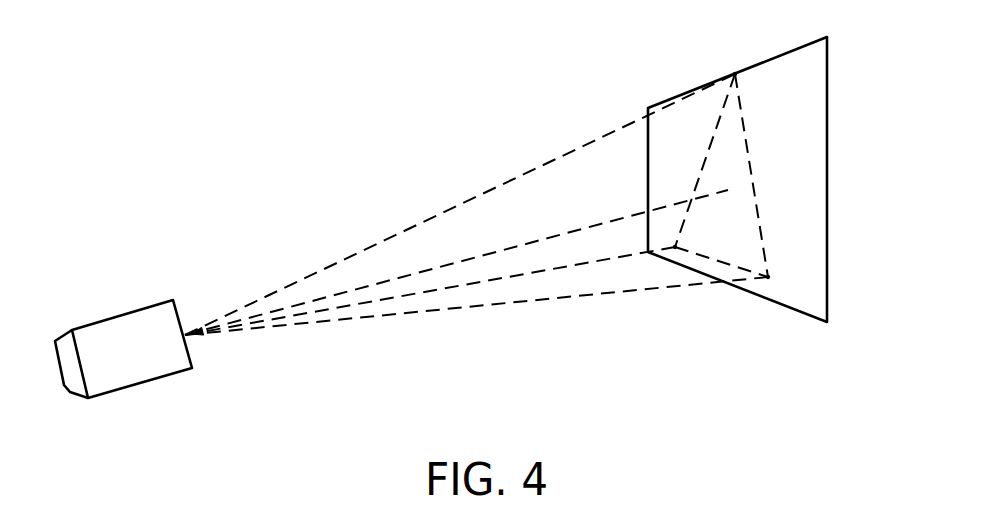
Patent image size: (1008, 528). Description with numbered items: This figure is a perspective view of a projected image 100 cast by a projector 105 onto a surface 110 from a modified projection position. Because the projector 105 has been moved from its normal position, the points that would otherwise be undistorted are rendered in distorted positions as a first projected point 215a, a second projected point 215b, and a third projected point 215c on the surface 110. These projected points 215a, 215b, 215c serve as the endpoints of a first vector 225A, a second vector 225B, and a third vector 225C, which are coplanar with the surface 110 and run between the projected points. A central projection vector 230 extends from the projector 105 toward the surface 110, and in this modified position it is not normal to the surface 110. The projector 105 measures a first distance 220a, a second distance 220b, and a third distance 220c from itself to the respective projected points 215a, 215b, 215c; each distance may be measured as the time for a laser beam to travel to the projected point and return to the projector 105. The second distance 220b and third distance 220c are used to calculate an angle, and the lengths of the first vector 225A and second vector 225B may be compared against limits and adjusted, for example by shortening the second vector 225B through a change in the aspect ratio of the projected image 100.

The projected image 100 is at (476, 224).
The projector 105 is at (154, 374).
The surface 110 is at (828, 262).
The first projected point 215a is at (674, 240).
The second projected point 215b is at (731, 70).
The third projected point 215c is at (768, 285).
The first distance 220a is at (511, 273).
The second distance 220b is at (378, 248).
The third distance 220c is at (553, 308).
The first vector 225A is at (752, 138).
The second vector 225B is at (688, 263).
The third vector 225C is at (697, 193).
The central projection vector 230 is at (410, 277).